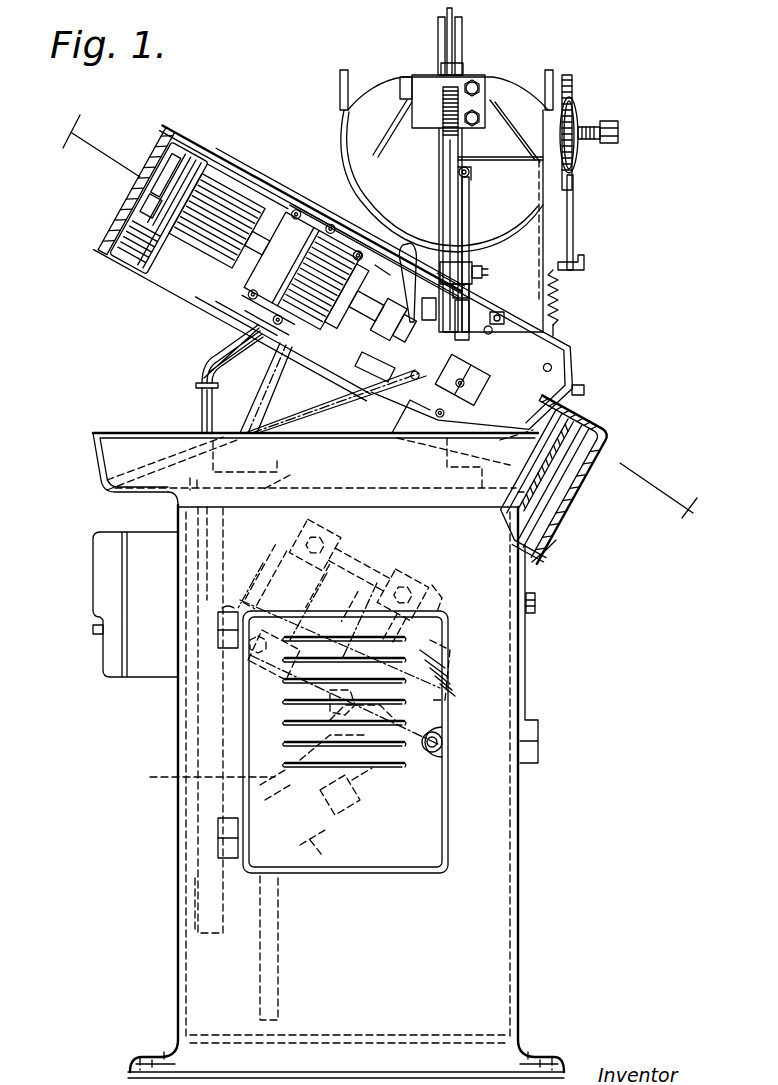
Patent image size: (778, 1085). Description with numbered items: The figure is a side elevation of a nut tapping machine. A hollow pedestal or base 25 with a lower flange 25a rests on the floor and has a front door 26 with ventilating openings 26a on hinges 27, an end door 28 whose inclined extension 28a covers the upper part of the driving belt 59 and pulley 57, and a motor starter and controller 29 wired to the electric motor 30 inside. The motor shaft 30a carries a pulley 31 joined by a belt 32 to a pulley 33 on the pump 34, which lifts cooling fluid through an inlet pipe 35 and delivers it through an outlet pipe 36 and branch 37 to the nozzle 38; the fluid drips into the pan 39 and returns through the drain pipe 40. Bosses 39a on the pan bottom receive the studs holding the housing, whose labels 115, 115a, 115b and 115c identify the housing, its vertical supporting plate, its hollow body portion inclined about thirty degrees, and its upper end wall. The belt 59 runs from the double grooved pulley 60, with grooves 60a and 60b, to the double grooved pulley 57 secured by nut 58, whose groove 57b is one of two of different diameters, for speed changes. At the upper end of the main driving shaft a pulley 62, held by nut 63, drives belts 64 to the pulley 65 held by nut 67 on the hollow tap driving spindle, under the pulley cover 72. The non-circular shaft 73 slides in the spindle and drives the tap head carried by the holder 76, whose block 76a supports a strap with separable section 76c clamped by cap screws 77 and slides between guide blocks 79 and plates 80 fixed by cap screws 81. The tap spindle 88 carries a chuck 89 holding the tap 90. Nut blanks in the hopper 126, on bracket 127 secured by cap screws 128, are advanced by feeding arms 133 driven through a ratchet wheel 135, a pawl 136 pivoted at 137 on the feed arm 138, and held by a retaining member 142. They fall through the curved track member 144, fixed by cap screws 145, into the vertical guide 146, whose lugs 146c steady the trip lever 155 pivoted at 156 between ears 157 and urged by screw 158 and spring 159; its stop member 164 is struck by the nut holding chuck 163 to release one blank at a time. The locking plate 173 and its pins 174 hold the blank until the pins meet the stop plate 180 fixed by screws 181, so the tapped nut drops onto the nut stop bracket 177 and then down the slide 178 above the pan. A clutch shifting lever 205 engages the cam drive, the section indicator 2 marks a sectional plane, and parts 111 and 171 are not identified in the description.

The section line 2- 2 is at (369, 325).
The pedestal or base 25 is at (522, 842).
The lower flange 25a is at (142, 1050).
The front door 26 is at (428, 860).
The ventilating openings 26a is at (372, 778).
The hinges 27 is at (218, 612).
The end door 28 is at (526, 647).
The inclined extension 28a is at (575, 530).
The motor starter and controller 29 is at (145, 663).
The electric motor 30 is at (360, 550).
The motor shaft 30a is at (393, 672).
The pulley 31 is at (430, 610).
The belt 32 is at (350, 800).
The pulley 33 is at (325, 848).
The pump 34 is at (191, 776).
The inlet pipe 35 is at (270, 937).
The outlet pipe 36 is at (200, 413).
The branch 37 is at (202, 365).
The nozzle 38 is at (405, 244).
The pan 39 is at (108, 433).
The bosses 39a is at (292, 476).
The drain pipe 40 is at (195, 878).
The double grooved pulley 57 is at (592, 466).
The groove 57b is at (575, 413).
The nut 58 is at (585, 483).
The driving belt 59 is at (553, 530).
The double grooved pulley 60 is at (457, 680).
The groove 60a is at (445, 663).
The groove 60b is at (380, 705).
The pulley 62 is at (118, 250).
The nut 63 is at (133, 223).
The belts 64 is at (130, 265).
The pulley 65 is at (186, 143).
The nut 67 is at (162, 166).
The pulley cover 72 is at (196, 158).
The shaft 73 is at (235, 248).
The holder 76 is at (283, 215).
The block 76a is at (255, 340).
The separable semicircular section 76c is at (325, 228).
The cap screws 77 is at (262, 335).
The guide blocks 79 is at (345, 245).
The plates 80 is at (296, 214).
The cap screws 81 is at (290, 222).
The tap spindle 88 is at (348, 330).
The chuck 89 is at (388, 308).
The tap 90 is at (400, 342).
The link 111 is at (378, 264).
The arm 115 is at (262, 405).
The rail 115a is at (245, 205).
The plate 115b is at (188, 299).
The rail 115c is at (235, 195).
The hopper 126 is at (380, 92).
The bracket 127 is at (560, 318).
The cap screws 128 is at (572, 338).
The feeding arms 133 is at (450, 7).
The ratchet wheel 135 is at (572, 78).
The pawl 136 is at (574, 202).
The pivot 137 is at (580, 258).
The feed arm 138 is at (560, 272).
The rack 142 is at (442, 62).
The curved track member 144 is at (448, 132).
The cap screws 145 is at (473, 80).
The vertical guide 146 is at (450, 220).
The lugs 146c is at (470, 294).
The trip lever 155 is at (470, 205).
The pivot 156 is at (469, 176).
The ears 157 is at (471, 172).
The screw 158 is at (480, 272).
The coil spring 159 is at (485, 250).
The nut holding chuck 163 is at (470, 342).
The stop member 164 is at (470, 327).
The block 171 is at (418, 322).
The locking plate 173 is at (403, 360).
The pins 174 is at (445, 412).
The nut stop bracket 177 is at (410, 402).
The slide 178 is at (338, 410).
The stop plate 180 is at (478, 378).
The screws 181 is at (478, 363).
The clutch shifting lever 205 is at (583, 387).